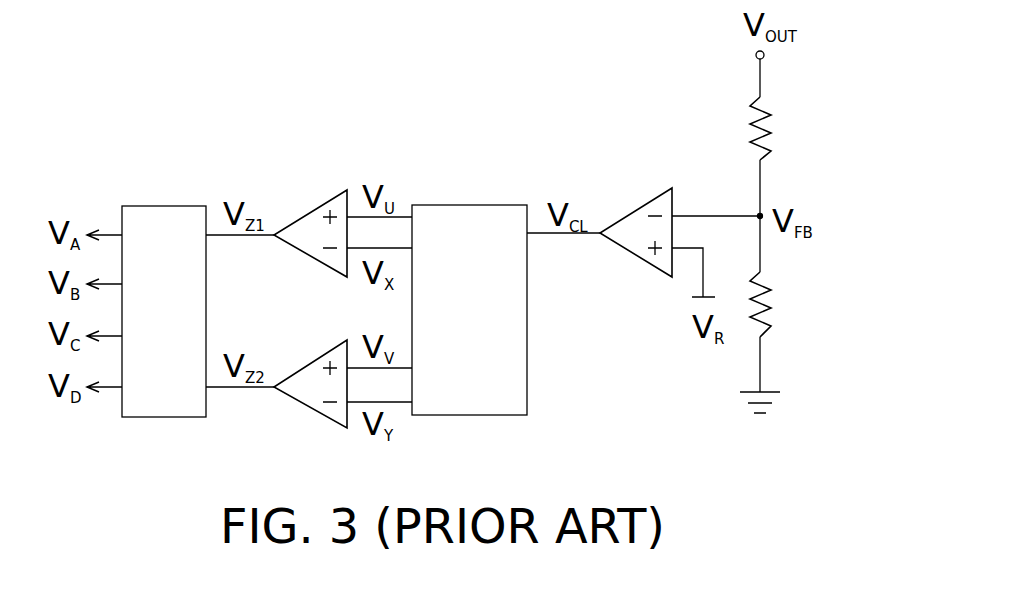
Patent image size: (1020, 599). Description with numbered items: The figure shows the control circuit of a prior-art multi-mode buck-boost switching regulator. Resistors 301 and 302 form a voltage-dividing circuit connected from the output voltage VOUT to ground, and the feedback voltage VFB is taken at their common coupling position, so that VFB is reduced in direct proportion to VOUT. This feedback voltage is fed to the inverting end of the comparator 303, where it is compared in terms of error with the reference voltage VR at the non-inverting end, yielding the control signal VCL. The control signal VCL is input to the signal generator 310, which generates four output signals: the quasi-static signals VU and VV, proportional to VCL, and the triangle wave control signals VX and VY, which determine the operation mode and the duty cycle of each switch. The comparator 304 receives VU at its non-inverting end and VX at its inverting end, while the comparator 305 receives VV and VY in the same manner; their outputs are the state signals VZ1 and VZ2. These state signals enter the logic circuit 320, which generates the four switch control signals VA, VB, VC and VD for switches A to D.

The resistor 301 is at (771, 132).
The resistor 302 is at (771, 304).
The comparator 303 is at (636, 210).
The comparator 304 is at (313, 210).
The comparator 305 is at (312, 366).
The signal generator 310 is at (492, 205).
The logic circuit 320 is at (163, 206).